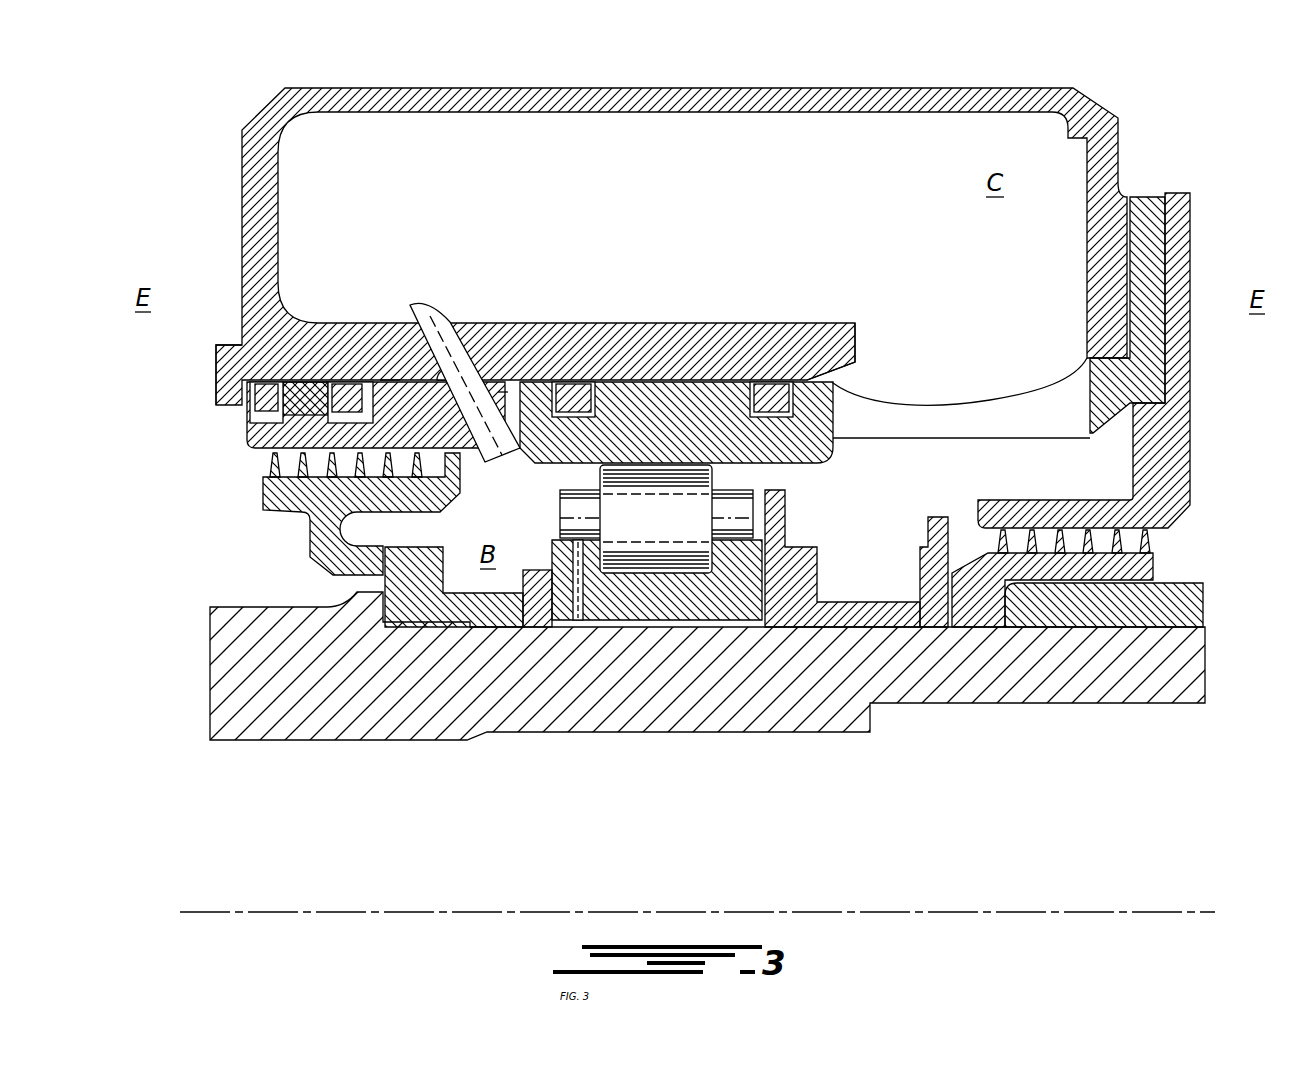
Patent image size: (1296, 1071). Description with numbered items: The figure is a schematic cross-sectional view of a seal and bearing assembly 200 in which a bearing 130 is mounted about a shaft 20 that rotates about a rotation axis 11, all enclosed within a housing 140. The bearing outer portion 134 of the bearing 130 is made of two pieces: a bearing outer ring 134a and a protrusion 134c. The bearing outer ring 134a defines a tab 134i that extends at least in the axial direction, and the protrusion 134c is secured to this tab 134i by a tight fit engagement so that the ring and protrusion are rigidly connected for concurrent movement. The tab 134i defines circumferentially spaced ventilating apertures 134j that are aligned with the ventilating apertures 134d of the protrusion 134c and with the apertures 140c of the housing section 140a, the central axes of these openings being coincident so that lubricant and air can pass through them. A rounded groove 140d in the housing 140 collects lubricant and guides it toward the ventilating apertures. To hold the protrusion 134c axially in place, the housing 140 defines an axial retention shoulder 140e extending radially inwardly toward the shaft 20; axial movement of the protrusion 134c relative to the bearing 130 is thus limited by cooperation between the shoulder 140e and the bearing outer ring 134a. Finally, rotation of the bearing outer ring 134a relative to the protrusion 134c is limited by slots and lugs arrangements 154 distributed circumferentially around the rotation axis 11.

The shaft 20 is at (1070, 705).
The bearing 130 is at (655, 648).
The bearing outer portion 134 is at (575, 370).
The bearing outer ring 134a is at (682, 415).
The protrusion 134c is at (378, 388).
The ventilating apertures 134d is at (510, 440).
The tab 134i is at (504, 388).
The ventilating apertures 134j is at (482, 392).
The housing 140 is at (611, 231).
The housing section 140a is at (778, 323).
The apertures 140c is at (400, 342).
The groove 140d is at (457, 370).
The axial retention shoulder 140e is at (216, 383).
The slots and lugs arrangements 154 is at (528, 399).
The seal and bearing assembly 200 is at (1180, 112).
The rotation axis 11 is at (1105, 915).